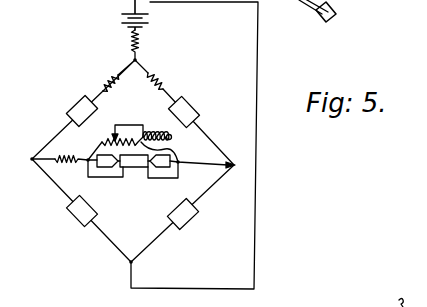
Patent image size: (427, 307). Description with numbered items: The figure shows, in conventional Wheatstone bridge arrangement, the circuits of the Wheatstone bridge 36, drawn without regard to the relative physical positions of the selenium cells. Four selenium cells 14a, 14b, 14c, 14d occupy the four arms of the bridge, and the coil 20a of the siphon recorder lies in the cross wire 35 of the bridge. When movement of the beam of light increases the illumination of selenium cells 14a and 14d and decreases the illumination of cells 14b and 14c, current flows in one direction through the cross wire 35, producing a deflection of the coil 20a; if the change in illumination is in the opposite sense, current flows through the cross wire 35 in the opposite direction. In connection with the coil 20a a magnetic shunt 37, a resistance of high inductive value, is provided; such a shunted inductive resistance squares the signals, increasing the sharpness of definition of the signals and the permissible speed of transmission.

The selenium cell 14a is at (69, 107).
The selenium cell 14b is at (196, 108).
The selenium cell 14c is at (70, 215).
The selenium cell 14d is at (188, 222).
The Wheatstone bridge 36 is at (141, 64).
The magnetic shunt 37 is at (163, 149).
The cross wire 35 is at (194, 176).
The coil 20a is at (136, 187).